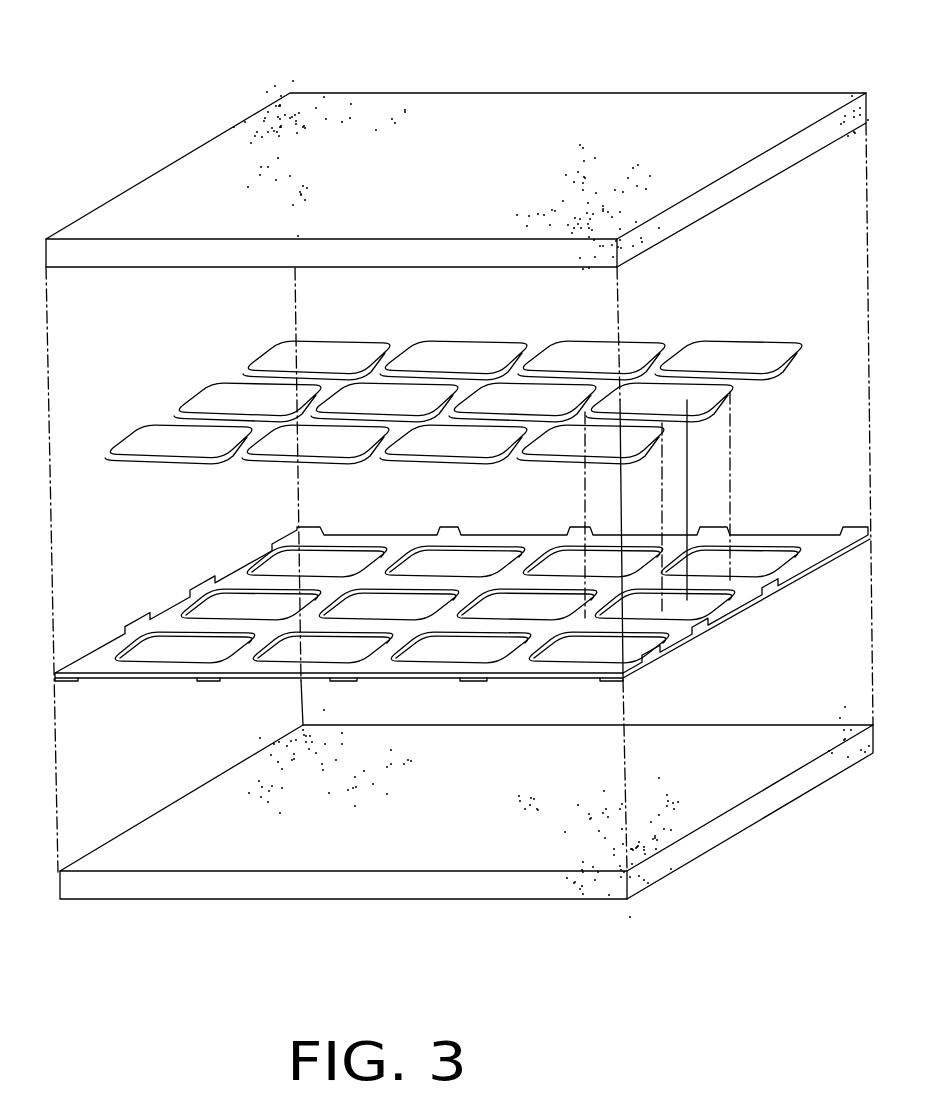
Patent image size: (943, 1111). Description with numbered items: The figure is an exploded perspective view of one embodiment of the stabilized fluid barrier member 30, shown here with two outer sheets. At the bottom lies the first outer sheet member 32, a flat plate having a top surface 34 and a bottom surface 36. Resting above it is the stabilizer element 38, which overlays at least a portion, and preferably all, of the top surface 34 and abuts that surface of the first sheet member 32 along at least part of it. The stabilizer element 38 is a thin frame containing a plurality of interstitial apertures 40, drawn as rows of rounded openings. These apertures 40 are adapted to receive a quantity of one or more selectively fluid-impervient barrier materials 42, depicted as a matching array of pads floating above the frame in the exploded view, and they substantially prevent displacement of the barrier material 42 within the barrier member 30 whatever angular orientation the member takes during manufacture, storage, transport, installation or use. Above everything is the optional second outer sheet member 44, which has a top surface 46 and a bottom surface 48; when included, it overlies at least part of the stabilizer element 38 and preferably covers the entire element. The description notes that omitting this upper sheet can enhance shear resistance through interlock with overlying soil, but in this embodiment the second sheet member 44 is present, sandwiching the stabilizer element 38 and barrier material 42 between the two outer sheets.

The stabilized fluid barrier member 30 is at (176, 110).
The first outer sheet member 32 is at (466, 801).
The top surface 34 is at (690, 742).
The bottom surface 36 is at (704, 845).
The stabilizer element 38 is at (462, 604).
The interstitial apertures 40 is at (230, 612).
The selectively fluid-impervient barrier material 42 is at (685, 397).
The second outer sheet member 44 is at (457, 153).
The top surface 46 is at (686, 108).
The bottom surface 48 is at (695, 220).